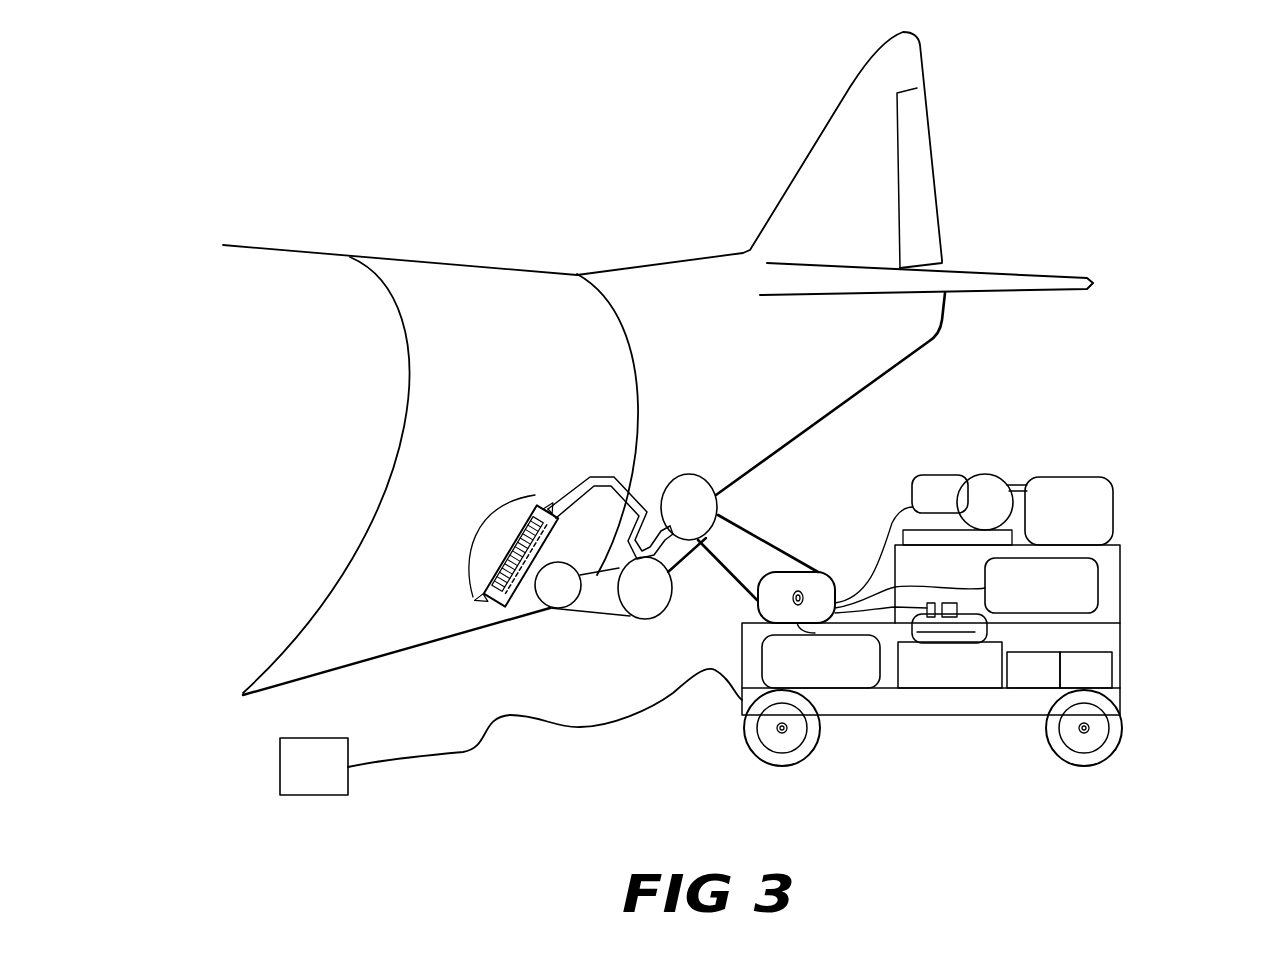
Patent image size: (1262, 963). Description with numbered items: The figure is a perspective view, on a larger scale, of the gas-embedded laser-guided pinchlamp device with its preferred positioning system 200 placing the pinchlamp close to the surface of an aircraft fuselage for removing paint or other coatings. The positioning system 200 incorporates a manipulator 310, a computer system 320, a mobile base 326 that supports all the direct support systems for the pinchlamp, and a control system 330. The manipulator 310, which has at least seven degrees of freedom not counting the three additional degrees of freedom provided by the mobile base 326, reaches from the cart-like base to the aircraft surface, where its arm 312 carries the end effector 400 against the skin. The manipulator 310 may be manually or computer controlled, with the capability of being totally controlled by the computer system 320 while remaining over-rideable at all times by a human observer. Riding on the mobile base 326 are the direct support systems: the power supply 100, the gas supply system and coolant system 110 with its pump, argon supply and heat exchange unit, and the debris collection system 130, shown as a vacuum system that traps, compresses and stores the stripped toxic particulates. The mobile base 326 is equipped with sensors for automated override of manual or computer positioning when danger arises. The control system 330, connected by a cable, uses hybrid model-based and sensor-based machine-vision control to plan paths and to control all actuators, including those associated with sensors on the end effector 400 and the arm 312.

The power supply 100 is at (982, 682).
The gas supply system and coolant system 110 is at (1107, 492).
The debris collection system 130 is at (868, 677).
The pinchlamp positioning system 200 is at (642, 645).
The manipulator 310 is at (727, 513).
The arm 312 is at (590, 562).
The computer system 320 is at (1090, 592).
The mobile base 326 is at (1112, 695).
The control system 330 is at (511, 732).
The end effector 400 is at (507, 607).